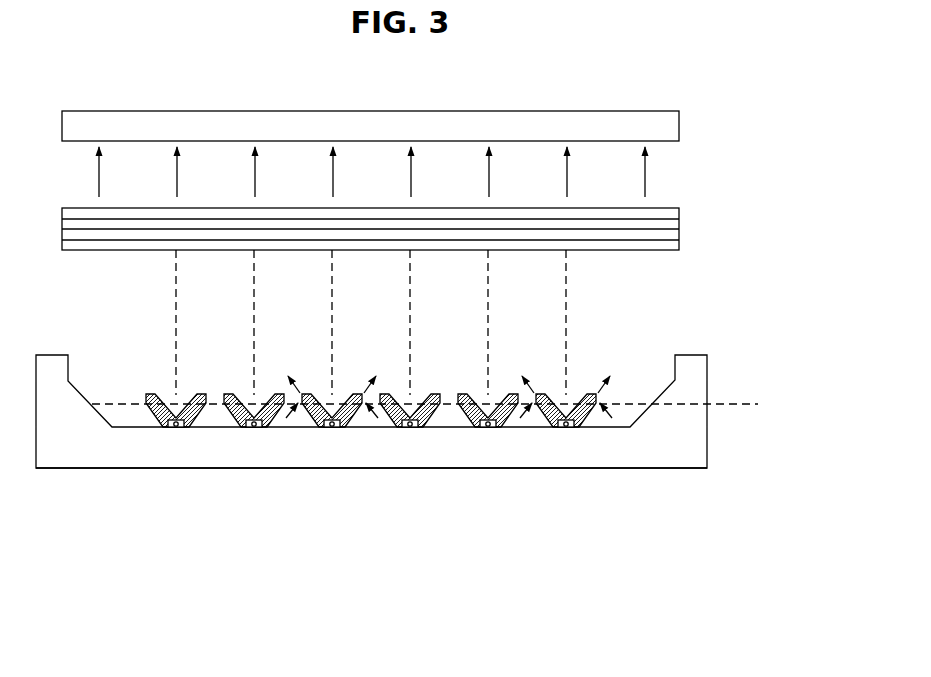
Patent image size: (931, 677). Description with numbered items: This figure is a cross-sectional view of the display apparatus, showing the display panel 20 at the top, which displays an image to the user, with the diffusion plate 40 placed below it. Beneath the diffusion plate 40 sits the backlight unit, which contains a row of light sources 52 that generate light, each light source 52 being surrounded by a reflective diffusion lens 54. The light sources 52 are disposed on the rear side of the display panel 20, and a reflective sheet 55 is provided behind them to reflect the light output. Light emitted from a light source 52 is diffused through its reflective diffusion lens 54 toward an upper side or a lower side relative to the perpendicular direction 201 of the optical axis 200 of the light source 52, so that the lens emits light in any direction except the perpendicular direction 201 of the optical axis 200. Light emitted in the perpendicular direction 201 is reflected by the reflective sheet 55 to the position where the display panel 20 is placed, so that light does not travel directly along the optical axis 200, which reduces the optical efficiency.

The display panel 20 is at (670, 123).
The diffusion plate 40 is at (693, 203).
The optical axis 200 is at (566, 293).
The perpendicular direction 201 is at (707, 368).
The reflective sheet 55 is at (659, 468).
The light source 52 is at (180, 427).
The reflective diffusion lens 54 is at (157, 427).